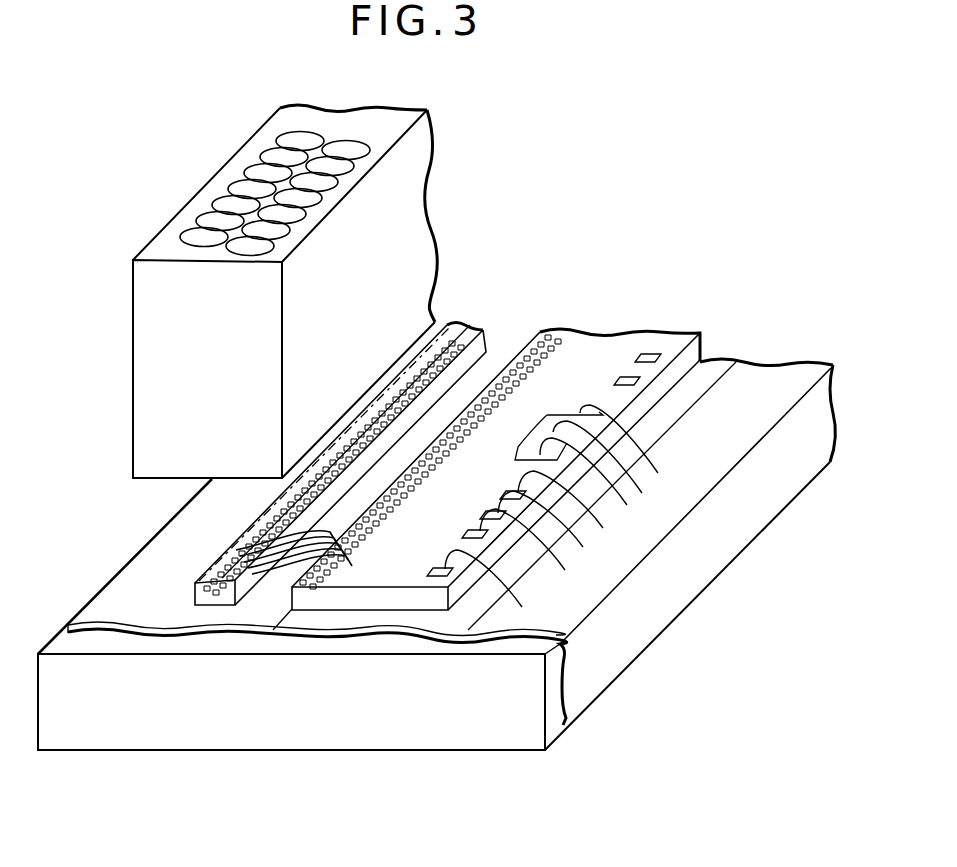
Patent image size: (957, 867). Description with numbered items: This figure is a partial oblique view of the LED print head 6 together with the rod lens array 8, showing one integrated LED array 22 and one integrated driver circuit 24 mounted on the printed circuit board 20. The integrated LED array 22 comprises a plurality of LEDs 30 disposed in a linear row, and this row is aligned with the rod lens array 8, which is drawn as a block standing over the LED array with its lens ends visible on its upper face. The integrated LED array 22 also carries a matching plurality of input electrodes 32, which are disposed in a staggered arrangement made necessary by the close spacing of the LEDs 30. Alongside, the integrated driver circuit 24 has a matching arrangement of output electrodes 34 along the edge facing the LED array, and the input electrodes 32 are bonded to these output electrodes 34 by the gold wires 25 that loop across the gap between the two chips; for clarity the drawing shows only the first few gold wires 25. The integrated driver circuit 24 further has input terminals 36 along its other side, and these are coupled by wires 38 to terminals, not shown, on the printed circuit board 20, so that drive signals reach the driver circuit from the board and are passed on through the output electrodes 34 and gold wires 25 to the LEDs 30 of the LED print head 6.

The LED print head 6 is at (89, 766).
The rod lens array 8 is at (427, 197).
The printed circuit board 20 is at (726, 571).
The integrated LED array 22 is at (463, 327).
The integrated driver circuit 24 is at (627, 338).
The gold wires 25 is at (330, 520).
The LEDs 30 is at (448, 326).
The input electrodes 32 is at (480, 327).
The output electrodes 34 is at (562, 333).
The input terminals 36 is at (675, 353).
The wires 38 is at (653, 462).